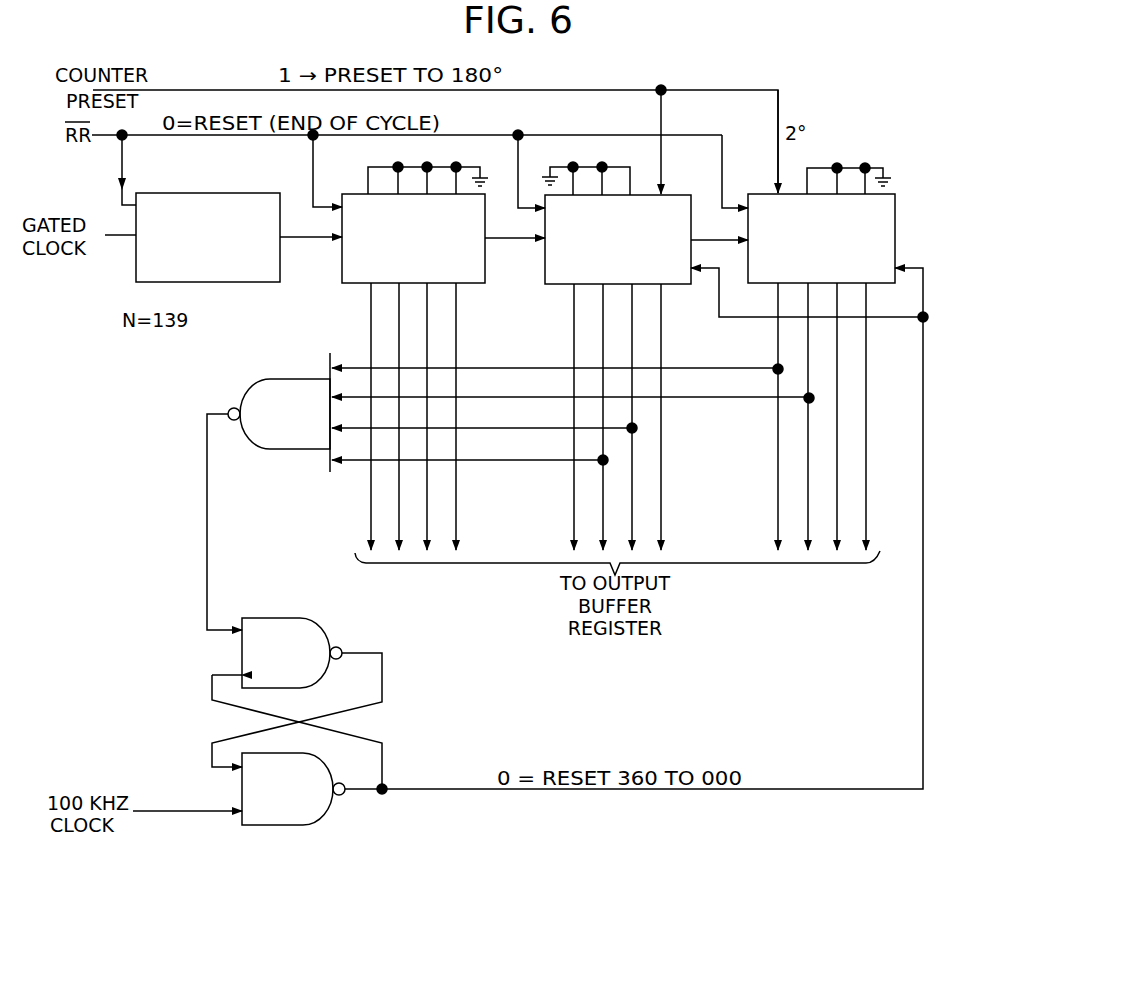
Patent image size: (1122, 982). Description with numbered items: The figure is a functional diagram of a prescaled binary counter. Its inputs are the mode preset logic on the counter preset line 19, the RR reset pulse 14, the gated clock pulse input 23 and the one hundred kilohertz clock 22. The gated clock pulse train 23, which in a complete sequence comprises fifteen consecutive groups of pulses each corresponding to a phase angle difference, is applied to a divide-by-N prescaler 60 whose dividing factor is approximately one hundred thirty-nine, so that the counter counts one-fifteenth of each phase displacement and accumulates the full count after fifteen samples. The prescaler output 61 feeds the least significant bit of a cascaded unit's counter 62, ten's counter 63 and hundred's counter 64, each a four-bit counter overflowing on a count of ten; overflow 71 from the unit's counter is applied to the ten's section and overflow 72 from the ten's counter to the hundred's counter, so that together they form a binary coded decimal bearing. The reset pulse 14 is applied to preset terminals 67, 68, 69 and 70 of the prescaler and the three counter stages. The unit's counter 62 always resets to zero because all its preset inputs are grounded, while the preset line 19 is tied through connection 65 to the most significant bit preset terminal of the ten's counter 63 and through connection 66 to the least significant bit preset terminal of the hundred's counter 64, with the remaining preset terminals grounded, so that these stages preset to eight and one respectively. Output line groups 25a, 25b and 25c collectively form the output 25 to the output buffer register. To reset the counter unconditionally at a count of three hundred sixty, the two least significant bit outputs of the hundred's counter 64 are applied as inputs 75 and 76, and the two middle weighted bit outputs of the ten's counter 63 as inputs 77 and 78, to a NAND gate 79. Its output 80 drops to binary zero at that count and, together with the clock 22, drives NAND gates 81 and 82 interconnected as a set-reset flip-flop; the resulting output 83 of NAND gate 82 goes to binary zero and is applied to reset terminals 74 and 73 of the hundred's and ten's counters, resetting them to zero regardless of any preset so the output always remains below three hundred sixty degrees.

The RR reset pulse 14 is at (98, 139).
The counter preset line 19 is at (205, 88).
The 100 KHz clock 22 is at (189, 810).
The gated clock pulse input 23 is at (110, 238).
The counter output 25 is at (496, 566).
The output line group from unit's counter 25a is at (370, 493).
The output line group from ten's counter 25b is at (573, 496).
The output line group from hundred's counter 25c is at (776, 493).
The divide-by-N prescaler 60 is at (216, 192).
The prescaler output 61 is at (289, 240).
The unit's counter 62 is at (344, 289).
The ten's counter 63 is at (548, 284).
The hundred's counter 64 is at (896, 222).
The preset data input to ten's counter 65 is at (669, 181).
The preset data input to hundred's counter 66 is at (773, 172).
The preset terminal of prescaler 67 is at (129, 190).
The preset terminal of unit's counter 68 is at (333, 193).
The preset terminal of ten's counter 69 is at (526, 212).
The preset terminal of hundred's counter 70 is at (729, 196).
The overflow from unit's counter 71 is at (518, 243).
The overflow from ten's counter 72 is at (709, 240).
The reset input terminal of ten's counter 73 is at (698, 272).
The reset input terminal of hundred's counter 74 is at (896, 266).
The NAND gate input 75 is at (704, 368).
The NAND gate input 76 is at (699, 401).
The NAND gate input 77 is at (522, 428).
The NAND gate input 78 is at (498, 461).
The NAND gate 79 is at (298, 376).
The NAND gate output 80 is at (209, 535).
The NAND gate 81 is at (297, 617).
The NAND gate 82 is at (310, 820).
The reset output 83 is at (402, 796).